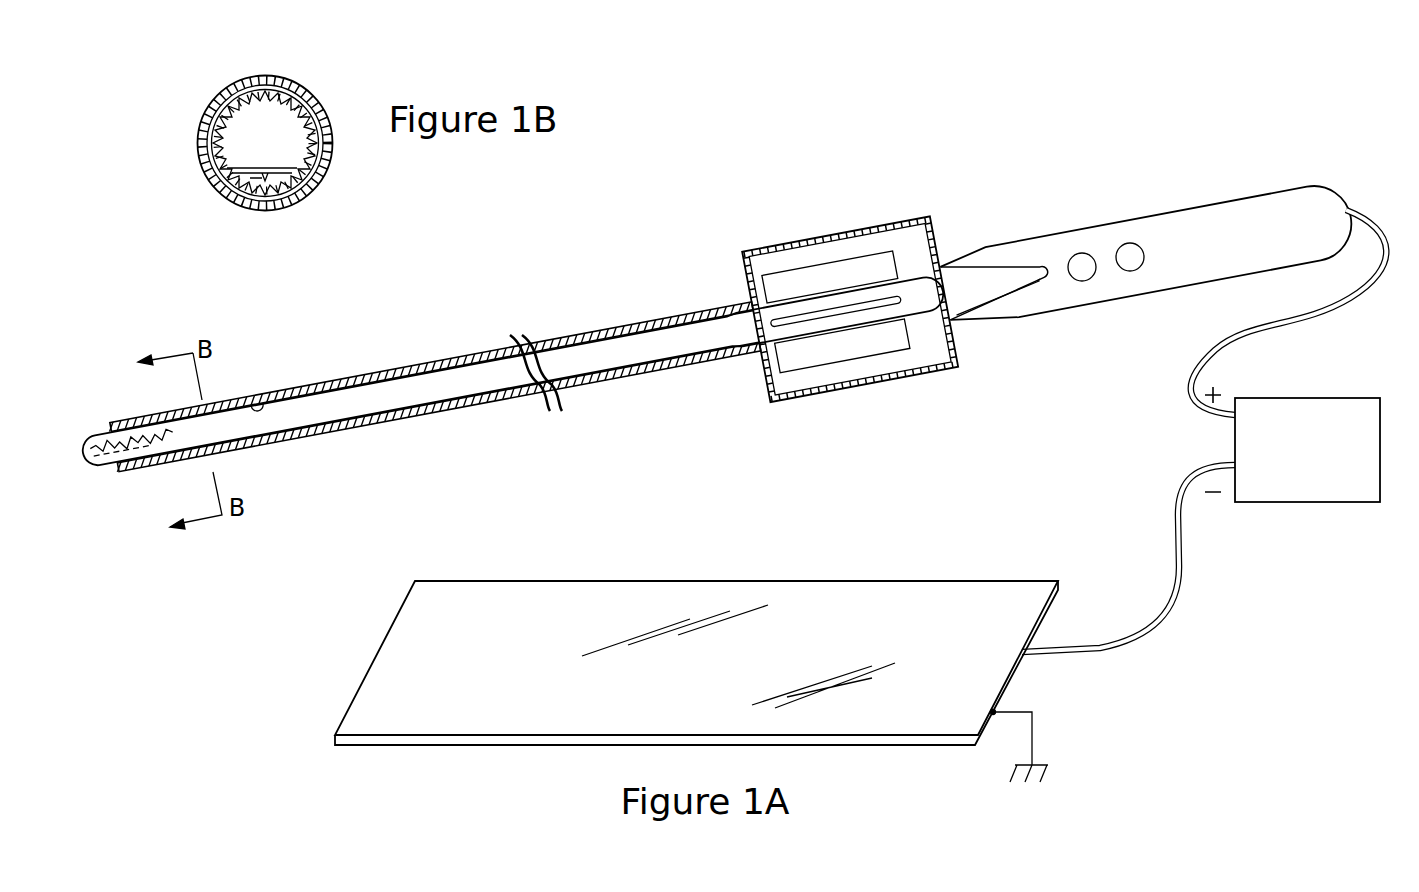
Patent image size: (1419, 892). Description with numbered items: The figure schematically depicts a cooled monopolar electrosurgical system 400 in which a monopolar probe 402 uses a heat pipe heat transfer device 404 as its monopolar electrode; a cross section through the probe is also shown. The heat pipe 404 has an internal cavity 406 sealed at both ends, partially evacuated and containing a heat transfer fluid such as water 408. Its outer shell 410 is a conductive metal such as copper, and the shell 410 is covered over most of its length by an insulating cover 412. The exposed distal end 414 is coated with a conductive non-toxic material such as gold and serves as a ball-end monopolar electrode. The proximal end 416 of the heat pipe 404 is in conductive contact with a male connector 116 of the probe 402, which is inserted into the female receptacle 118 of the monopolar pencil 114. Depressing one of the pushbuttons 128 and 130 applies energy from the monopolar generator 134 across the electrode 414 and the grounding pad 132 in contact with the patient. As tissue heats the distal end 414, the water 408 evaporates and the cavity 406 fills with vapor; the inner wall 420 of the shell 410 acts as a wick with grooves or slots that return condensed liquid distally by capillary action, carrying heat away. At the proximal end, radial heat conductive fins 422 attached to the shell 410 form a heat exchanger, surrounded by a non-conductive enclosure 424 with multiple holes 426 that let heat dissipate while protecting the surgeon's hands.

In FIG. 1A, the monopolar pencil 114 is at (1147, 255).
In FIG. 1A, the male connector 116 is at (1037, 281).
In FIG. 1A, the female receptacle 118 is at (996, 284).
In FIG. 1A, the pushbutton 128 is at (1083, 252).
In FIG. 1A, the pushbutton 130 is at (1130, 243).
In FIG. 1A, the grounding pad 132 is at (612, 580).
In FIG. 1A, the monopolar generator 134 is at (1296, 398).
In FIG. 1A, the monopolar electrosurgical system 400 is at (178, 692).
In FIG. 1A, the monopolar probe 402 is at (717, 334).
In FIG. 1A, the heat pipe heat transfer device 404 is at (513, 372).
In FIG. 1B, the internal cavity 406 is at (298, 92).
In FIG. 1A, the internal cavity 406 is at (432, 367).
In FIG. 1B, the water 408 is at (252, 190).
In FIG. 1A, the water 408 is at (495, 373).
In FIG. 1B, the outer shell 410 is at (312, 187).
In FIG. 1A, the outer shell 410 is at (438, 407).
In FIG. 1B, the insulating cover 412 is at (216, 101).
In FIG. 1A, the insulating cover 412 is at (438, 407).
In FIG. 1A, the distal end 414 is at (86, 448).
In FIG. 1A, the proximal end 416 is at (941, 292).
In FIG. 1B, the inner wall 420 is at (208, 136).
In FIG. 1A, the inner wall 420 is at (257, 408).
In FIG. 1A, the radial heat conductive fins 422 is at (836, 312).
In FIG. 1A, the non-conductive enclosure 424 is at (850, 309).
In FIG. 1A, the holes 426 is at (850, 309).